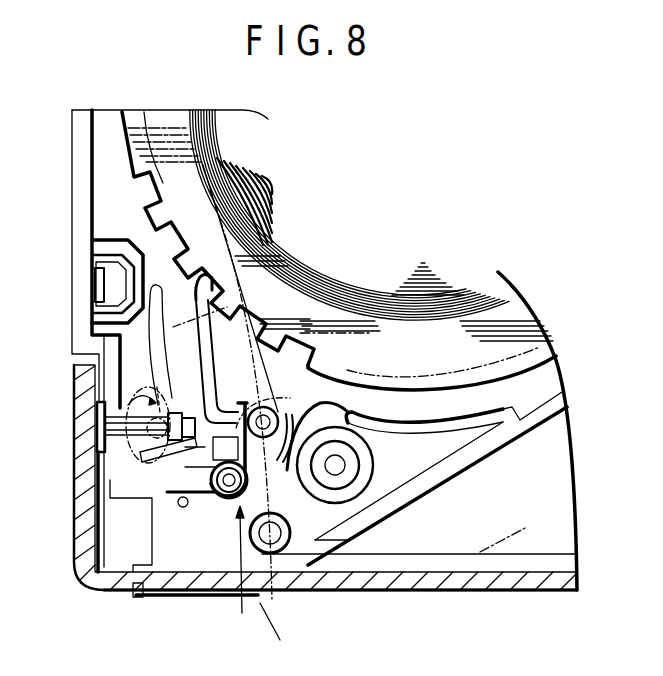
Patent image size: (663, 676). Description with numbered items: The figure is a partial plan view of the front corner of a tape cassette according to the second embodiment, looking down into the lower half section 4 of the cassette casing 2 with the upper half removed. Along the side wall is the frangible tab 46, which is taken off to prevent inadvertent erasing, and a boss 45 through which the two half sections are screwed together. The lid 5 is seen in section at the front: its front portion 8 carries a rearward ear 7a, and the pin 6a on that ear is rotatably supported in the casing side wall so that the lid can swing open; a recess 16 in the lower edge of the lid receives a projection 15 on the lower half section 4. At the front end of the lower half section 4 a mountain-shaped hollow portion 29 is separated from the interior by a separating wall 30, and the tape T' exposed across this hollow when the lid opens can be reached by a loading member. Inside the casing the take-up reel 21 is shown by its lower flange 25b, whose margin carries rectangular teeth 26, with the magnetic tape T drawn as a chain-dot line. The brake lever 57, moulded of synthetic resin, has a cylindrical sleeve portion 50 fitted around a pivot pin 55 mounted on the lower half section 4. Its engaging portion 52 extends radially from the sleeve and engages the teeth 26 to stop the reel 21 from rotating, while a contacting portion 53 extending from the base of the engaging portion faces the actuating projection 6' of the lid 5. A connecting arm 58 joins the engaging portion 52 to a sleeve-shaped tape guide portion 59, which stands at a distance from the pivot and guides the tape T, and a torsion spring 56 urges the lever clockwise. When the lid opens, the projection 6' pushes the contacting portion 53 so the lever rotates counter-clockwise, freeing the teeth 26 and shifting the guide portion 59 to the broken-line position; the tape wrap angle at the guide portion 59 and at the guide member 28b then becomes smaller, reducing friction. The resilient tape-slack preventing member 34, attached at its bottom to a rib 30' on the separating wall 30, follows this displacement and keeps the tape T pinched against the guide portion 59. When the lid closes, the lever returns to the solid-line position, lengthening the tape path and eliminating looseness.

The cassette casing 2 is at (43, 165).
The lower half section 4 is at (76, 212).
The frangible tab 46 is at (113, 287).
The pin 6a is at (112, 423).
The actuating projection 6' is at (144, 389).
The ear 7a is at (86, 512).
The recess 16 is at (133, 600).
The projection 15 is at (200, 598).
The contacting portion 53 is at (150, 468).
The pivot pin 55 is at (218, 495).
The cylindrical sleeve portion 50 is at (230, 492).
The torsion spring 56 is at (246, 425).
The connecting arm 58 is at (218, 398).
The tape guide portion 59 is at (275, 416).
The engaging portion 52 is at (200, 296).
The lower flange 25b is at (157, 118).
The rectangular teeth 26 is at (180, 255).
The magnetic tape T is at (219, 201).
The take-up reel 21 is at (352, 223).
The tape-slack preventing member 34 is at (330, 403).
The magnetic tape T' is at (424, 442).
The rib 30' is at (424, 386).
The boss 45 is at (373, 453).
The separating wall 30 is at (437, 478).
The mountain-shaped hollow portion 29 is at (532, 501).
The guide member 28b is at (277, 545).
The brake lever 57 is at (253, 574).
The lid 5 is at (437, 594).
The front portion 8 is at (512, 584).